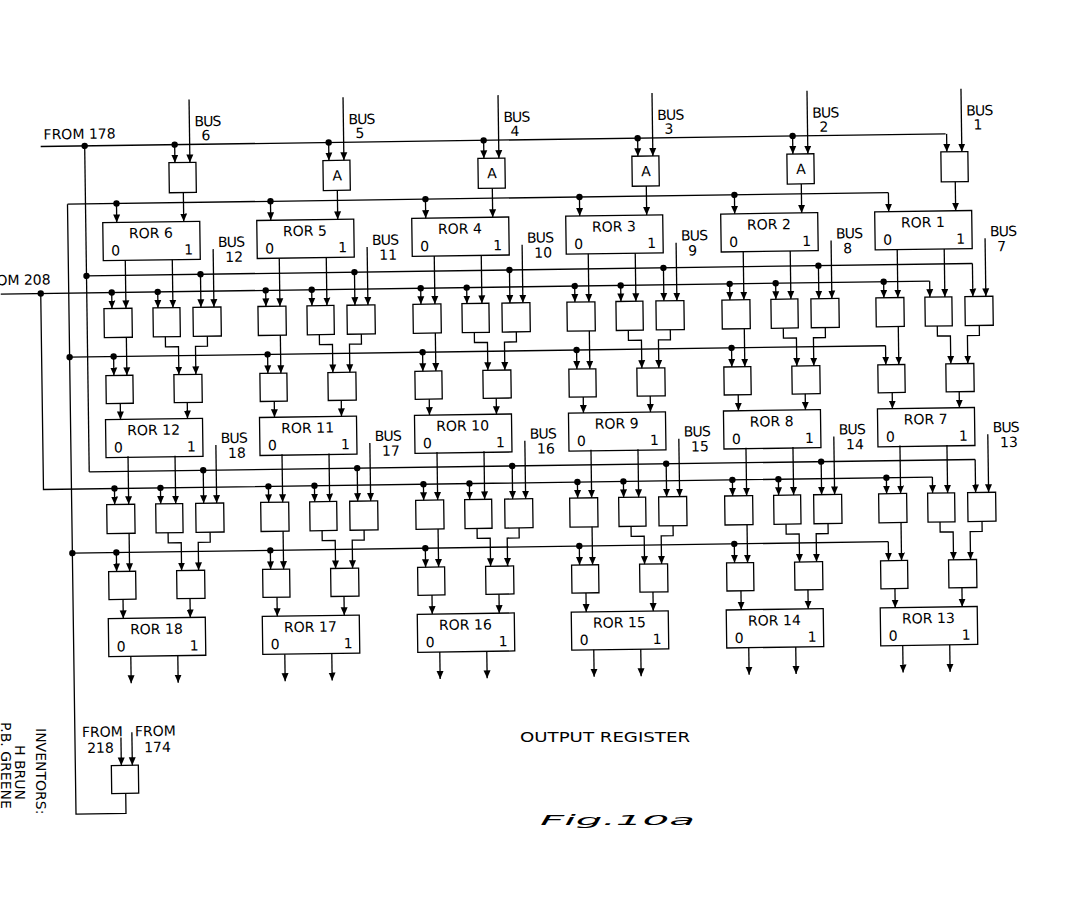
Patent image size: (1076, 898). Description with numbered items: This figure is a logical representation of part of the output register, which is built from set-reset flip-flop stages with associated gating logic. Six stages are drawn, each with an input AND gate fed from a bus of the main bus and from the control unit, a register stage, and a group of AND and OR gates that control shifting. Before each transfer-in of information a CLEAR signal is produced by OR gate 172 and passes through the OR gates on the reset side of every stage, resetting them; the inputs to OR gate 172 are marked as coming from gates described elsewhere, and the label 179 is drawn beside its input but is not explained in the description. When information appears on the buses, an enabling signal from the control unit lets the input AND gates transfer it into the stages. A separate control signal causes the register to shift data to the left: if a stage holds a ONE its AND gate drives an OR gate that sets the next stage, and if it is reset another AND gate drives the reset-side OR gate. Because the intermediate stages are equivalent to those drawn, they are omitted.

The OR gate 172 is at (133, 781).
The OR gate (clear) 179 is at (129, 756).